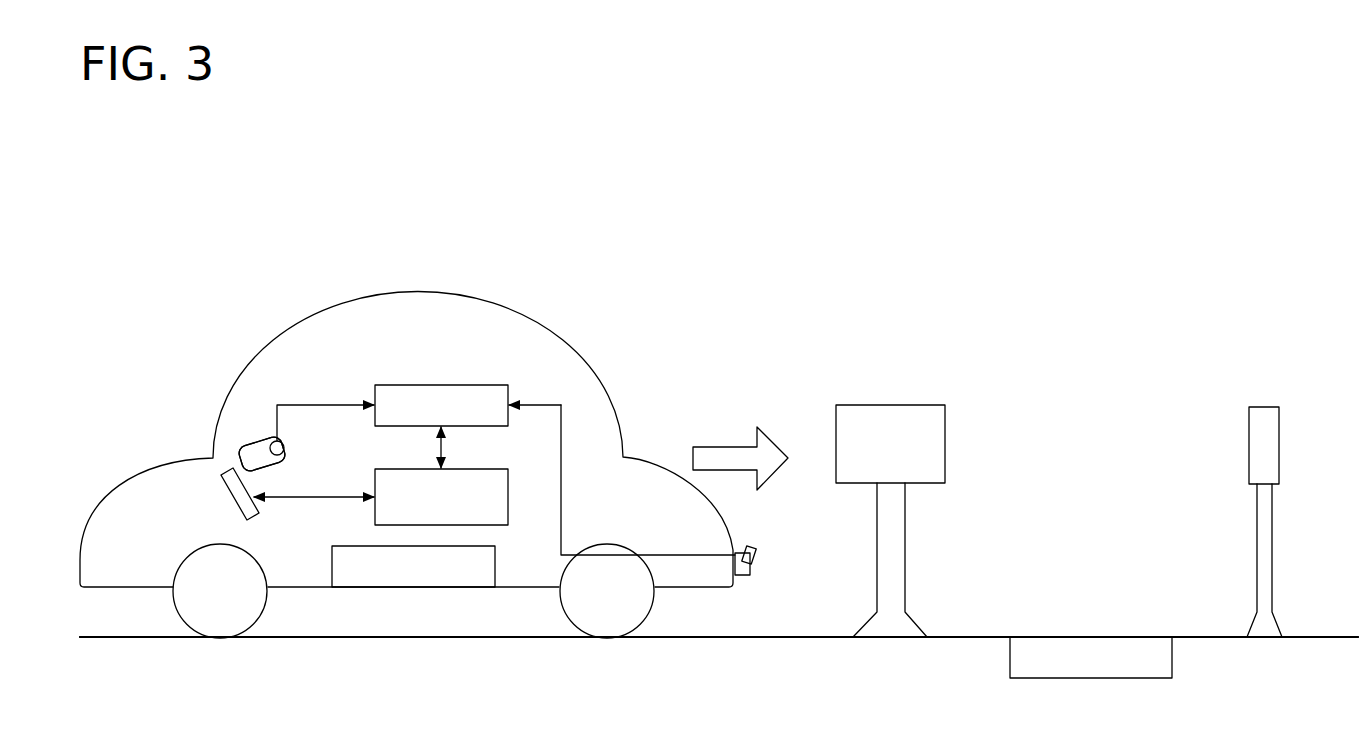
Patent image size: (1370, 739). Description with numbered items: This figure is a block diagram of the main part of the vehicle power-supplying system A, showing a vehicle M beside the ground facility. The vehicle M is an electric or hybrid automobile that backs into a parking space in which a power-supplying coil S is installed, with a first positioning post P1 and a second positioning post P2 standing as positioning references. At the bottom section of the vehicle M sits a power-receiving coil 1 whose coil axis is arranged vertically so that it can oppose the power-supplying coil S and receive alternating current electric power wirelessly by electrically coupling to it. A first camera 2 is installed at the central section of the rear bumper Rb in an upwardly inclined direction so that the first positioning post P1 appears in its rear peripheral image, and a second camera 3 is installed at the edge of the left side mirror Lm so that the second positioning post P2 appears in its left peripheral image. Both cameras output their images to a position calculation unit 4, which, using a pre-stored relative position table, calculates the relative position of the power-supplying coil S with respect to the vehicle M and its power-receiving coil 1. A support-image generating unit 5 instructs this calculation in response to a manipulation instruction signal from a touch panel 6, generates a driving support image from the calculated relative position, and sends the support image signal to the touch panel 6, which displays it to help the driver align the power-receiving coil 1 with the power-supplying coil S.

The power-receiving coil 1 is at (329, 568).
The first camera 2 is at (758, 552).
The second camera 3 is at (284, 464).
The position calculation unit 4 is at (472, 383).
The support-image generating unit 5 is at (470, 468).
The touch panel 6 is at (234, 495).
The vehicle M is at (282, 333).
The left side mirror Lm is at (253, 436).
The rear bumper Rb is at (744, 578).
The first positioning post P1 is at (1268, 407).
The second positioning post P2 is at (915, 405).
The power-supplying coil S is at (1088, 679).
The vehicle power-supplying system A is at (1162, 226).